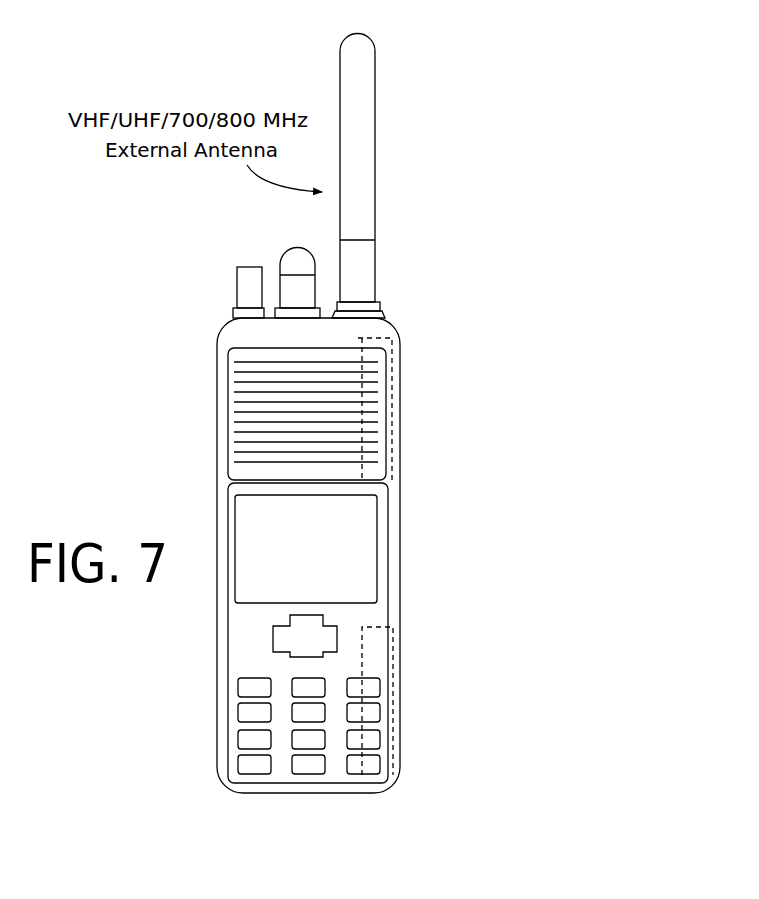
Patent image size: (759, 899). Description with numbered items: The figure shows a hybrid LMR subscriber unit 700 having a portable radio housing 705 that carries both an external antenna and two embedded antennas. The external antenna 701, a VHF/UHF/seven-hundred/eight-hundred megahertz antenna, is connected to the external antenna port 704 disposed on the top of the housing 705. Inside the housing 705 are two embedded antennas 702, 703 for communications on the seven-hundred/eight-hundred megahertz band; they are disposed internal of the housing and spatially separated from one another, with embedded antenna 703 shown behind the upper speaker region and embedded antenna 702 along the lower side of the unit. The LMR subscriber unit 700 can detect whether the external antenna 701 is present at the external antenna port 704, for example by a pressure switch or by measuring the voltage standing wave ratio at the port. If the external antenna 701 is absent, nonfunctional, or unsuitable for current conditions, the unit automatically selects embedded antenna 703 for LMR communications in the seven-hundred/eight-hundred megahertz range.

The LMR subscriber unit 700 is at (308, 521).
The external antenna 701 is at (376, 157).
The embedded antenna 702 is at (392, 630).
The embedded antenna 703 is at (387, 487).
The external antenna port 704 is at (383, 311).
The portable radio housing 705 is at (217, 437).